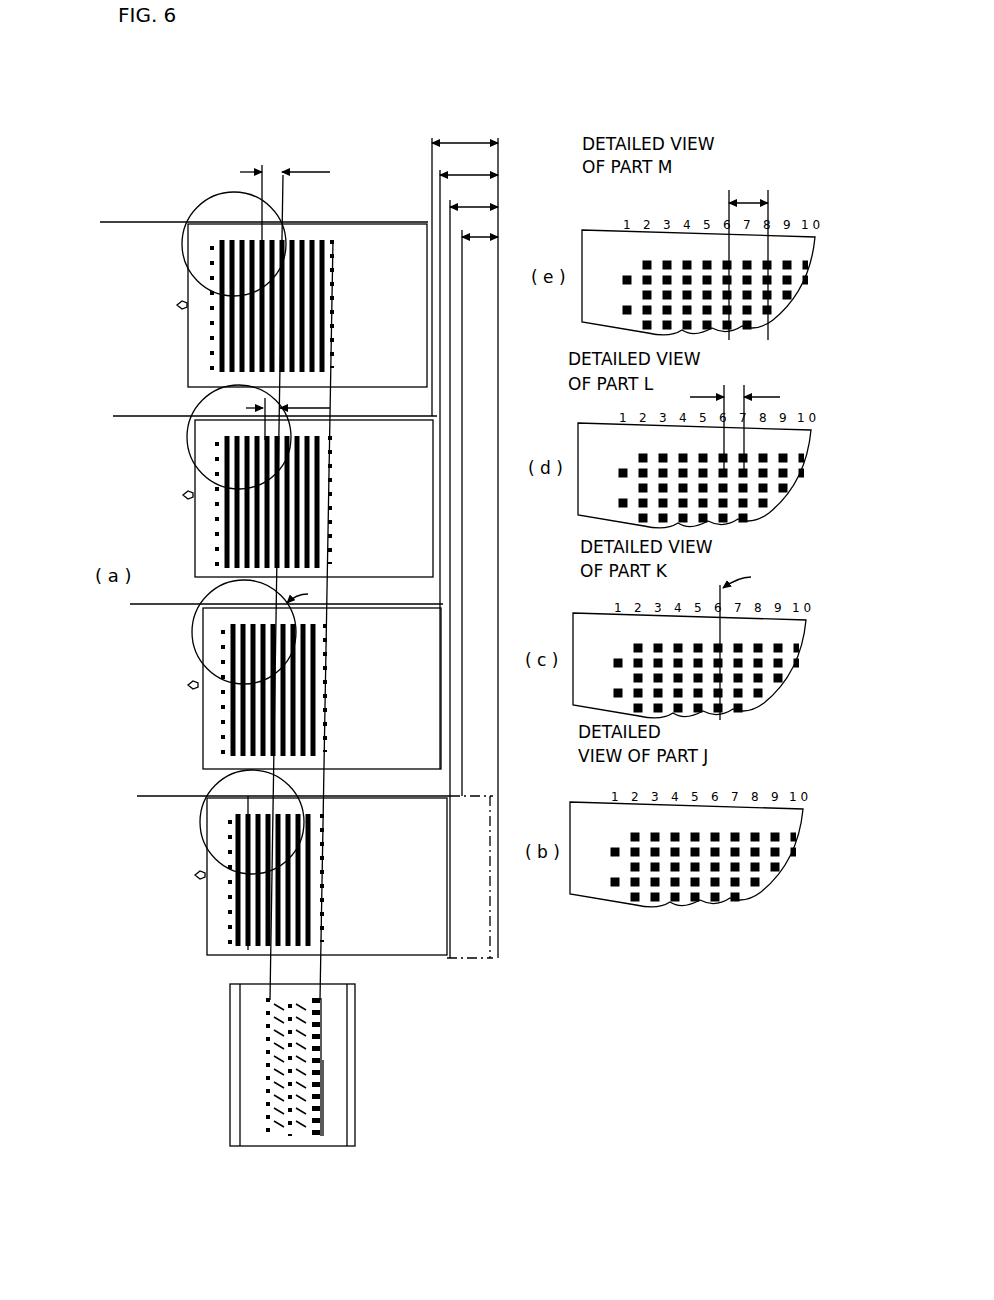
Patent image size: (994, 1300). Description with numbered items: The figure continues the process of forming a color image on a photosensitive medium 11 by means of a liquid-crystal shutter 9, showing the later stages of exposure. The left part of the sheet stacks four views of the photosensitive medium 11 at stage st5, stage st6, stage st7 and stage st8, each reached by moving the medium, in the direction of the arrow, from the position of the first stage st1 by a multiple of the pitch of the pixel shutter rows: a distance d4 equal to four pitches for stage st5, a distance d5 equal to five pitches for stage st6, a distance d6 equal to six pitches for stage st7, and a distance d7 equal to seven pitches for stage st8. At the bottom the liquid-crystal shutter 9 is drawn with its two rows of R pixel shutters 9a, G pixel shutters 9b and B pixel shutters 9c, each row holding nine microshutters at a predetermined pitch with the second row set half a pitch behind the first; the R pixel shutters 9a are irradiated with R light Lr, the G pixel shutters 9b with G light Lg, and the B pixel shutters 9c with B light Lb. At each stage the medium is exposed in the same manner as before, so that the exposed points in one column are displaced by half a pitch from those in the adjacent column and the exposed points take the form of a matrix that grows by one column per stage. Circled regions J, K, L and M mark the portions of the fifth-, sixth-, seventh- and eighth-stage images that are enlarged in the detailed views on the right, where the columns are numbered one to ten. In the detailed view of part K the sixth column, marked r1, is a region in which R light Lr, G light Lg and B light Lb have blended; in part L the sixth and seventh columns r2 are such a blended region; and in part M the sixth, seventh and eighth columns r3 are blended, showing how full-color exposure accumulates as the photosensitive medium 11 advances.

The photosensitive medium 11 is at (207, 872).
The liquid-crystal shutter 9 is at (335, 1003).
The R pixel shutters 9a is at (313, 1050).
The G pixel shutters 9b is at (313, 1075).
The B pixel shutters 9c is at (313, 1095).
The R light Lr is at (268, 998).
The G light Lg is at (268, 1022).
The B light Lb is at (268, 1043).
The stage 1 st1 is at (492, 937).
The stage 5 st5 is at (293, 875).
The stage 6 st6 is at (286, 686).
The stage 7 st7 is at (275, 496).
The stage 8 st8 is at (264, 304).
The part M is at (190, 213).
The part L is at (196, 404).
The part K is at (202, 594).
The part J is at (211, 784).
The exposed region r1 is at (532, 642).
The exposed region r2 is at (513, 423).
The exposed region r3 is at (504, 245).
The distance d4 is at (480, 507).
The distance d5 is at (474, 573).
The distance d6 is at (469, 464).
The distance d7 is at (465, 541).